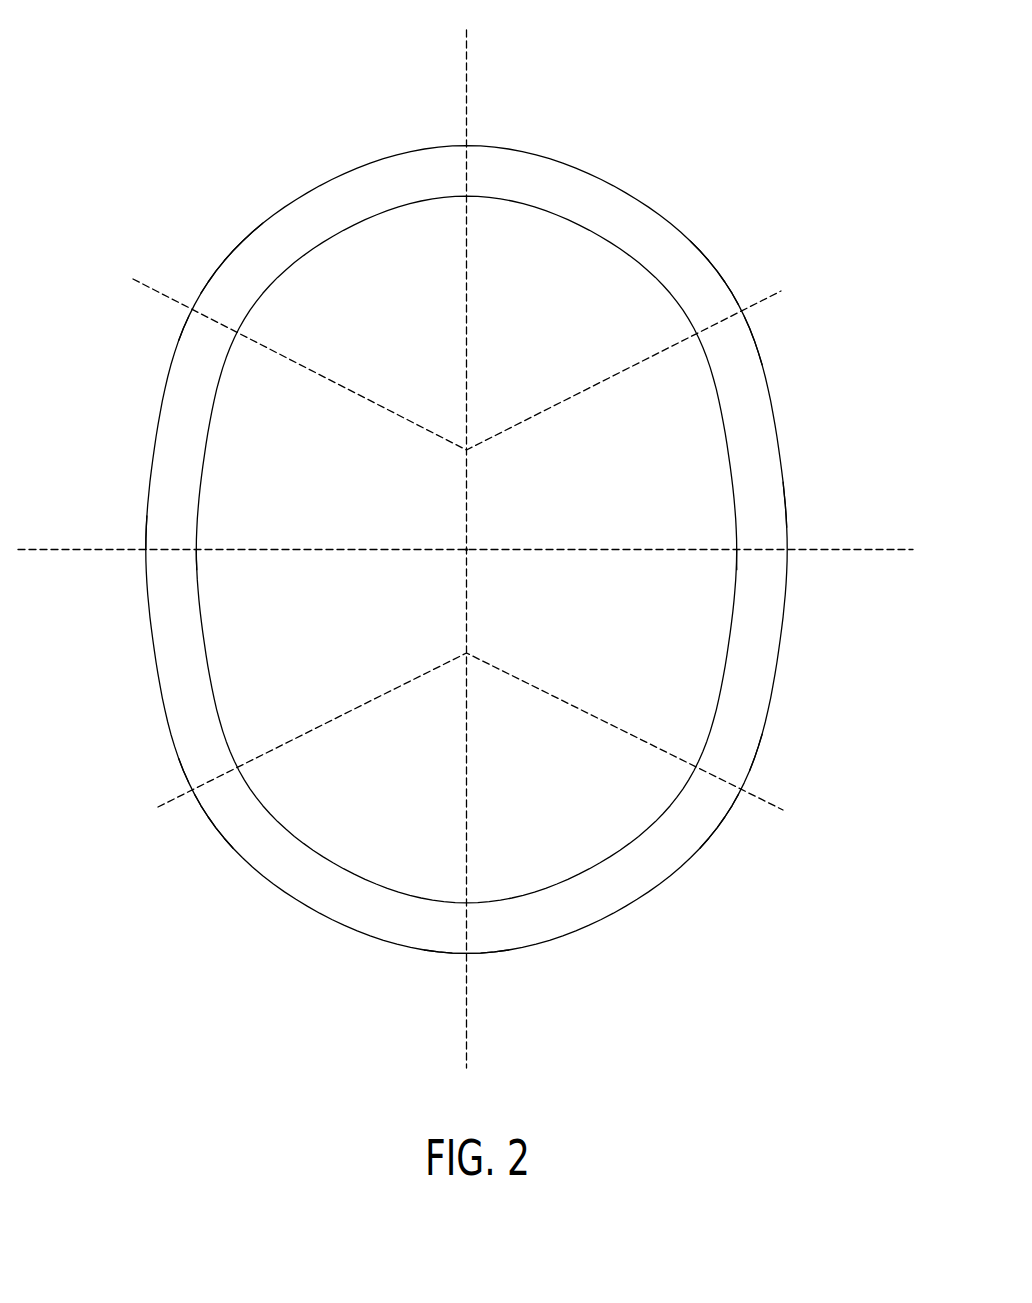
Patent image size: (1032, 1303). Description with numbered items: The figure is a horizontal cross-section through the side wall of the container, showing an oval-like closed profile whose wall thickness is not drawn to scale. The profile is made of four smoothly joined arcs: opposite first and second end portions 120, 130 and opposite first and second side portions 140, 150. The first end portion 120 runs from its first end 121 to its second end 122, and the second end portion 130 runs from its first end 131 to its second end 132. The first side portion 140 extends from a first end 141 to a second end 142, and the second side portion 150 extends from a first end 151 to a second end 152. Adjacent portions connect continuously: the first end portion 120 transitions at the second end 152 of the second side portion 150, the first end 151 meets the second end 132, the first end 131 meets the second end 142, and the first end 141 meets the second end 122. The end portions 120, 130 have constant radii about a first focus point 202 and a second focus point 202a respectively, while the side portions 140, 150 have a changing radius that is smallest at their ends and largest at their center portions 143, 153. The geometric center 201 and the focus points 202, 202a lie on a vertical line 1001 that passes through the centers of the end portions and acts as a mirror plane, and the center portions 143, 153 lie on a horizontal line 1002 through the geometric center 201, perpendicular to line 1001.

The first end portion 120 is at (609, 125).
The first end of first end portion 121 is at (209, 278).
The second end of first end portion 122 is at (728, 283).
The second end portion 130 is at (498, 956).
The first end of second end portion 131 is at (730, 813).
The second end of second end portion 132 is at (208, 822).
The first side portion 140 is at (785, 513).
The first end of first side portion 141 is at (752, 338).
The second end of first side portion 142 is at (758, 755).
The center portion of first side portion 143 is at (760, 552).
The second side portion 150 is at (146, 520).
The first end of second side portion 151 is at (178, 770).
The second end of second side portion 152 is at (181, 333).
The center portion of second side portion 153 is at (175, 552).
The geometric center 201 is at (470, 547).
The first focus point 202 is at (468, 448).
The second focus point 202a is at (468, 655).
The line 1001 is at (467, 1043).
The line 1002 is at (900, 548).